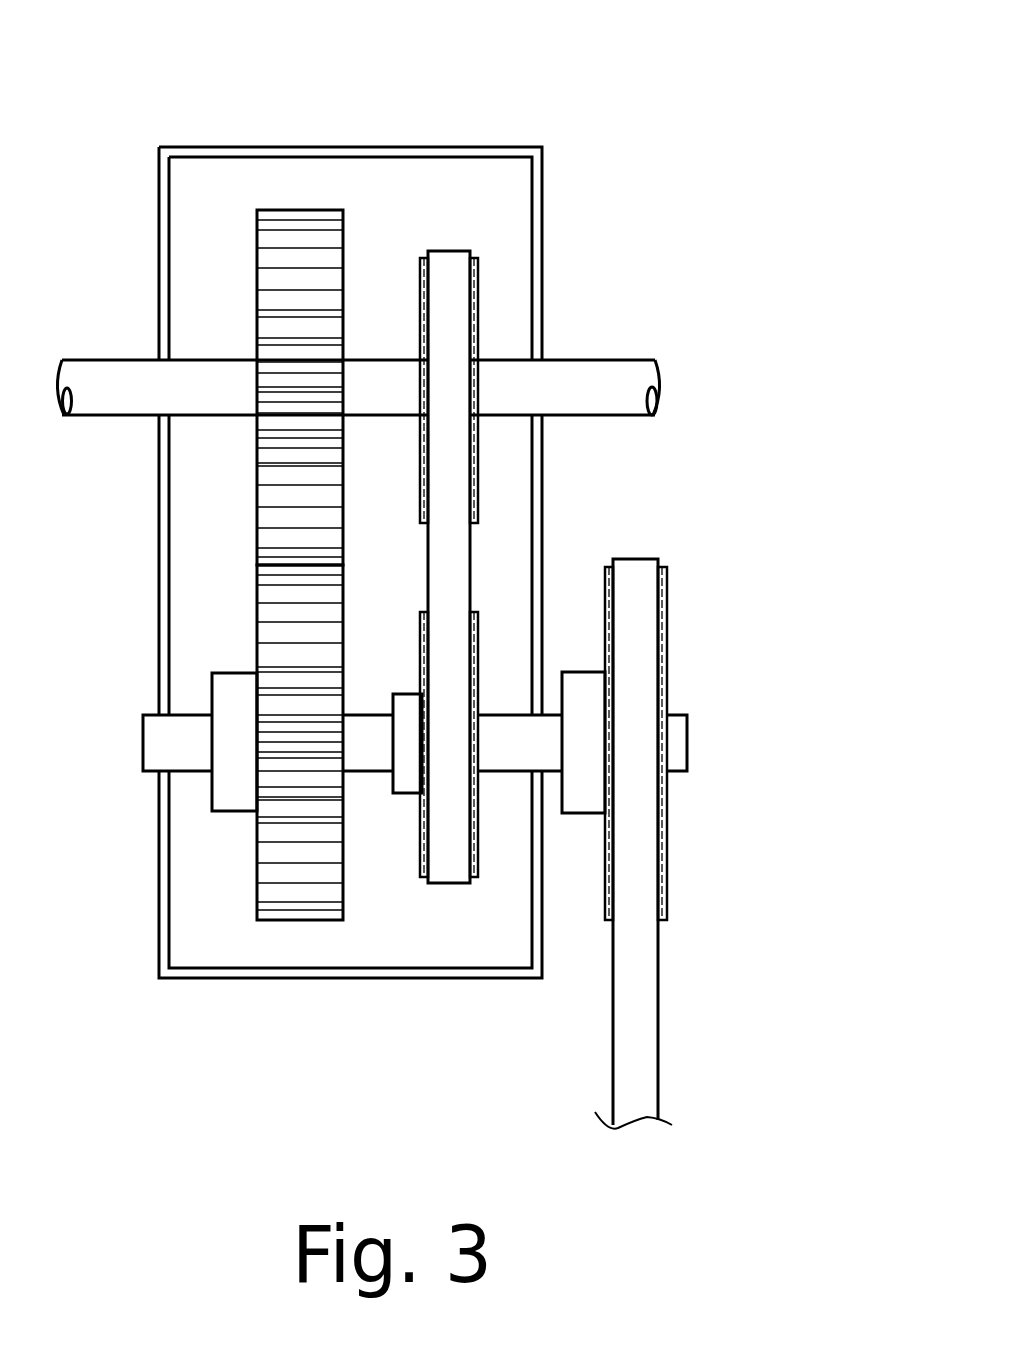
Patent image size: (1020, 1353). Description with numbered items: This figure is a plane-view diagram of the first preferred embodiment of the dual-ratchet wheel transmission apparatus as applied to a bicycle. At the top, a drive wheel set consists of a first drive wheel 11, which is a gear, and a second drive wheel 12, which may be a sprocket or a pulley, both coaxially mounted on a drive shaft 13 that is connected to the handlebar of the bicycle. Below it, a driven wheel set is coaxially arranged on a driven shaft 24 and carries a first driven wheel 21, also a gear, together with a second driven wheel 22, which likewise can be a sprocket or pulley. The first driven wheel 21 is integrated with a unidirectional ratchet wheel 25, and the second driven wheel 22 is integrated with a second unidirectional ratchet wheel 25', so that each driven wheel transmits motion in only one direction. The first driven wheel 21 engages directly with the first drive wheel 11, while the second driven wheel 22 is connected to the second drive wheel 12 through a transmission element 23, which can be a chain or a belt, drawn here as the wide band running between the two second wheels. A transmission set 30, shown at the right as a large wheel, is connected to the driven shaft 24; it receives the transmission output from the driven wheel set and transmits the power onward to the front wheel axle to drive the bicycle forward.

The first drive wheel 11 is at (287, 237).
The second drive wheel 12 is at (474, 552).
The drive shaft 13 is at (187, 387).
The first driven wheel 21 is at (299, 903).
The second driven wheel 22 is at (478, 853).
The transmission element 23 is at (450, 273).
The driven shaft 24 is at (362, 752).
The unidirectional ratchet wheel 25 is at (207, 888).
The unidirectional ratchet wheel 25' is at (433, 899).
The transmission set 30 is at (690, 838).